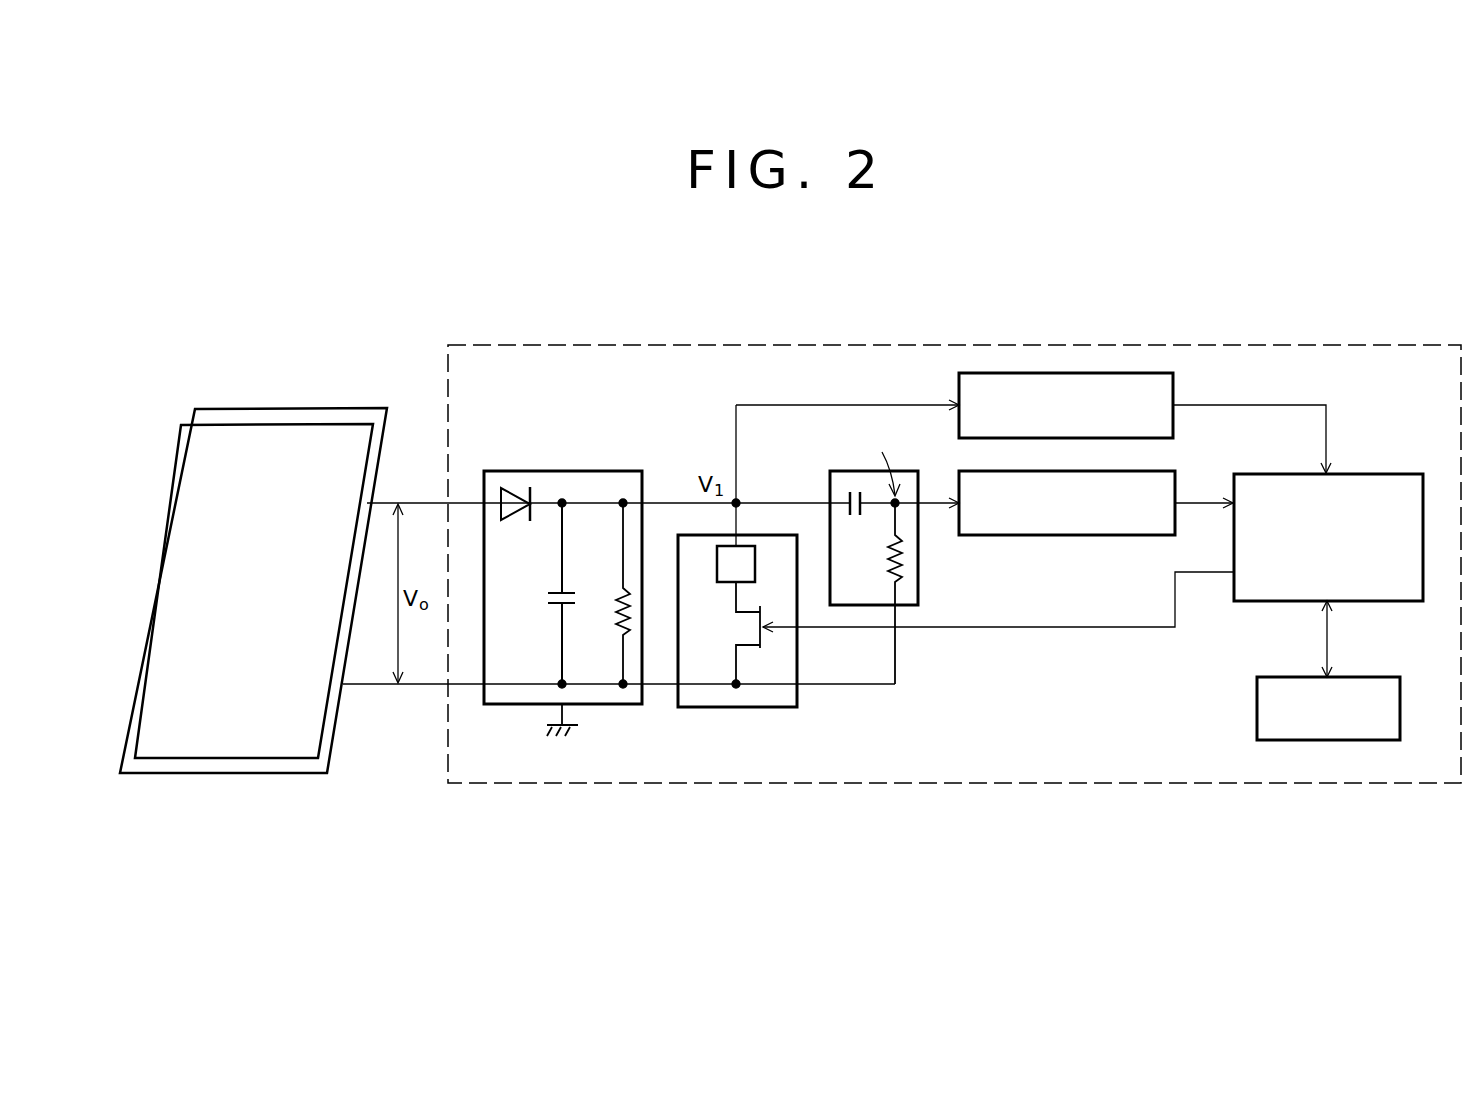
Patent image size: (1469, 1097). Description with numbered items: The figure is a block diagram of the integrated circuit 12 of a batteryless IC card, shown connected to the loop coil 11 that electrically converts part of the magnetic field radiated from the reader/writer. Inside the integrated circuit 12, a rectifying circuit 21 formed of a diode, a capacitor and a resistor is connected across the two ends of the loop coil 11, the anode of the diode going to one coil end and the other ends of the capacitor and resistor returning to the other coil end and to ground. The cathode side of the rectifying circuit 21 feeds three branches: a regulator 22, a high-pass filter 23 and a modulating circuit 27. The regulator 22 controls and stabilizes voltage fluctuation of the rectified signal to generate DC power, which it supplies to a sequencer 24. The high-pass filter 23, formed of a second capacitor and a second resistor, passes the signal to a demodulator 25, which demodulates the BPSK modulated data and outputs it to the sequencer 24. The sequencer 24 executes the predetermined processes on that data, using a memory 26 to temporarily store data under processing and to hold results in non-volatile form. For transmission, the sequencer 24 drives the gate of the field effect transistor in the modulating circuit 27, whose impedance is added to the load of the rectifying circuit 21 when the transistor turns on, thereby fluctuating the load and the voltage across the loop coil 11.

The loop coil 11 is at (312, 406).
The integrated circuit 12 is at (1277, 345).
The rectifying circuit 21 is at (545, 471).
The regulator 22 is at (1175, 380).
The high-pass filter 23 is at (918, 577).
The sequencer 24 is at (1406, 474).
The demodulator 25 is at (1175, 478).
The memory 26 is at (1395, 677).
The modulating circuit 27 is at (732, 708).